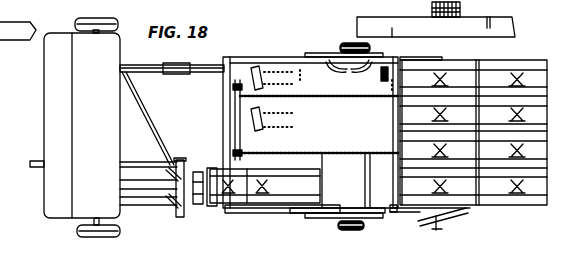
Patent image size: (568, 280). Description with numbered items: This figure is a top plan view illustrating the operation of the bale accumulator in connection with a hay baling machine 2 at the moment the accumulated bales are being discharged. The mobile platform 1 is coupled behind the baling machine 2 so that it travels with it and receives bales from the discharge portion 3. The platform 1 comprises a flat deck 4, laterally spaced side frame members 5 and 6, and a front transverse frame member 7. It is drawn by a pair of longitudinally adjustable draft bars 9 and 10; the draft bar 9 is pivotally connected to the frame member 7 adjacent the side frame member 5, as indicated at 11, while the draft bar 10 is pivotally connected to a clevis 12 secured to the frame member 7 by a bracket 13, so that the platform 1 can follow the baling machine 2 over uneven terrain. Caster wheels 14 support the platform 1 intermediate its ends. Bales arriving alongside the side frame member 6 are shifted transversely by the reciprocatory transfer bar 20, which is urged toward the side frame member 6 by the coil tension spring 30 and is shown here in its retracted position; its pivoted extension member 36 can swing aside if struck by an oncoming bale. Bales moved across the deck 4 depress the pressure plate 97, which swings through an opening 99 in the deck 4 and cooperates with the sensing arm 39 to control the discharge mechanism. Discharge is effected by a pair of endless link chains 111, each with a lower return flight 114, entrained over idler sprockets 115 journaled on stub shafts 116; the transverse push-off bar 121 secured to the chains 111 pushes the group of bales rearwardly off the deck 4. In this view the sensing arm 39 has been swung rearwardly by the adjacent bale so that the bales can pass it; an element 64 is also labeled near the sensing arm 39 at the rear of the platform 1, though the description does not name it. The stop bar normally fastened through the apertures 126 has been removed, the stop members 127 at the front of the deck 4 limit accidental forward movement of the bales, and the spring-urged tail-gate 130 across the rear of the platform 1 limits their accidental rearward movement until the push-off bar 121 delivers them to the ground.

The mobile platform 1 is at (290, 56).
The hay baling machine 2 is at (96, 131).
The discharge portion 3 is at (162, 205).
The deck 4 is at (320, 139).
The side frame member 5 is at (285, 56).
The side frame member 6 is at (268, 210).
The front transverse frame member 7 is at (228, 110).
The draft bar 9 is at (176, 74).
The draft bar 10 is at (170, 160).
The pivotal connection 11 is at (218, 66).
The clevis 12 is at (218, 160).
The bracket 13 is at (222, 160).
The caster wheels 14 is at (344, 43).
The transfer bar 20 is at (340, 197).
The coil tension spring 30 is at (30, 12).
The extension member 36 is at (268, 194).
The sensing arm 39 is at (478, 217).
The bracket 64 is at (0, 226).
The pressure plate 97 is at (386, 80).
The opening 99 is at (387, 70).
The link chains 111 is at (330, 97).
The lower return flight 114 is at (432, 8).
The idler sprockets 115 is at (50, 18).
The stub shafts 116 is at (246, 145).
The push-off bar 121 is at (88, 19).
The apertures 126 is at (346, 78).
The stop members 127 is at (250, 76).
The tail-gate 130 is at (0, 138).